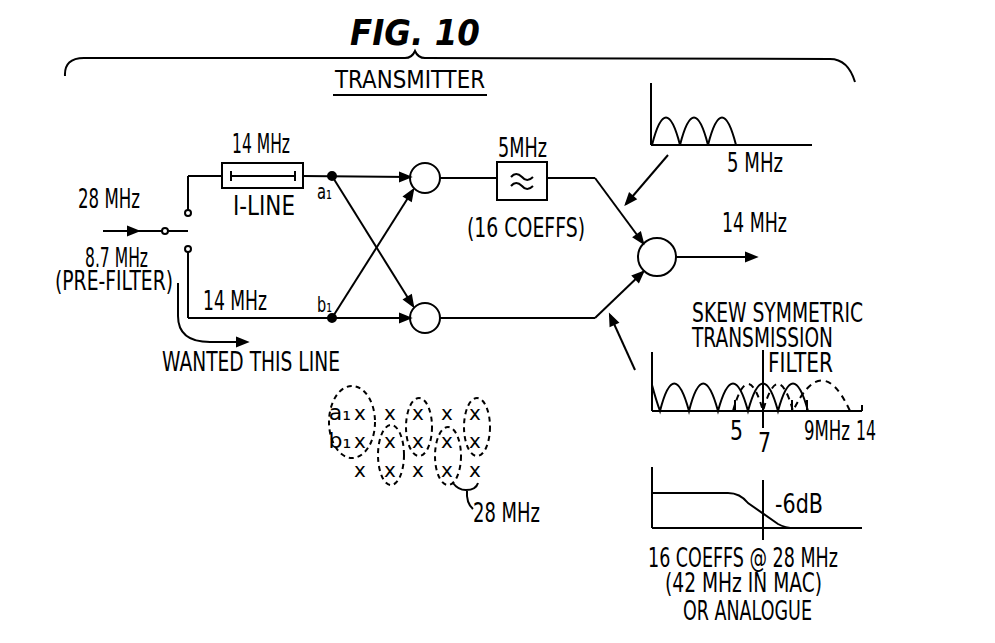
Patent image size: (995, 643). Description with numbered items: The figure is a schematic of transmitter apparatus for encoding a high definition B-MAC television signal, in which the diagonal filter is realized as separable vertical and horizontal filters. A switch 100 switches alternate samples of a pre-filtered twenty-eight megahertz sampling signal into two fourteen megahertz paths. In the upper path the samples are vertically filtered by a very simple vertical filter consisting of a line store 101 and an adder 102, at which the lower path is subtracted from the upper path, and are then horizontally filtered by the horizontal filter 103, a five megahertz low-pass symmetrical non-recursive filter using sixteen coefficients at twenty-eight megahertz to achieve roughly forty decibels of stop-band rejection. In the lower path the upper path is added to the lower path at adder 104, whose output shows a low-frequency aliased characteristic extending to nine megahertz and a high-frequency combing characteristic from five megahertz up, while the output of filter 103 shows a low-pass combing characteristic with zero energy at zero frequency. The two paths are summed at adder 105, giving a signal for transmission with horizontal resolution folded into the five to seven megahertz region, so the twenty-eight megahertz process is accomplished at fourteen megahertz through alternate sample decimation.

The switch 100 is at (209, 232).
The line store 101 is at (303, 165).
The adder 102 is at (436, 167).
The horizontal filter 103 is at (547, 163).
The adder 104 is at (436, 329).
The adder 105 is at (671, 268).